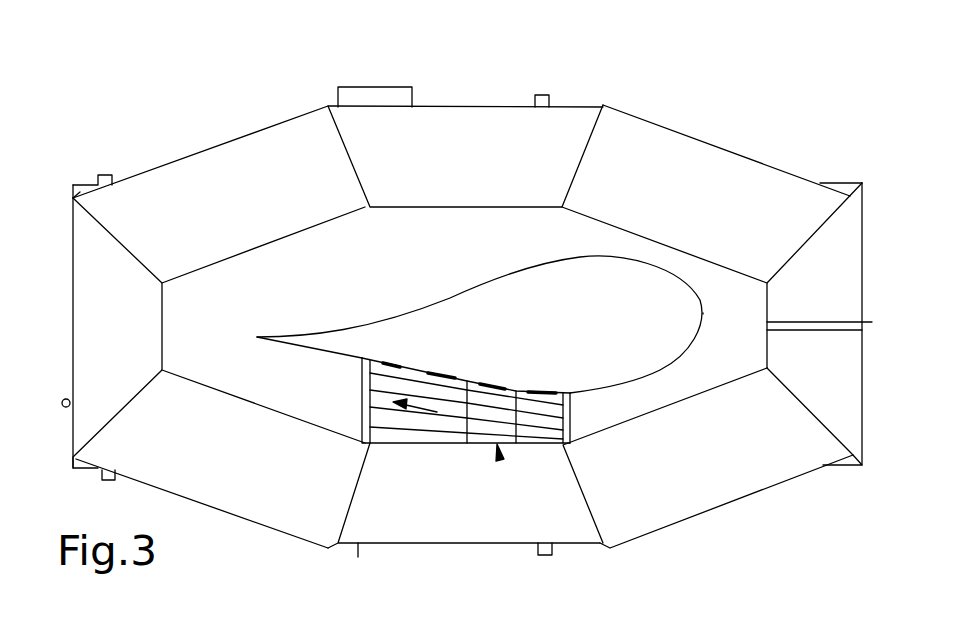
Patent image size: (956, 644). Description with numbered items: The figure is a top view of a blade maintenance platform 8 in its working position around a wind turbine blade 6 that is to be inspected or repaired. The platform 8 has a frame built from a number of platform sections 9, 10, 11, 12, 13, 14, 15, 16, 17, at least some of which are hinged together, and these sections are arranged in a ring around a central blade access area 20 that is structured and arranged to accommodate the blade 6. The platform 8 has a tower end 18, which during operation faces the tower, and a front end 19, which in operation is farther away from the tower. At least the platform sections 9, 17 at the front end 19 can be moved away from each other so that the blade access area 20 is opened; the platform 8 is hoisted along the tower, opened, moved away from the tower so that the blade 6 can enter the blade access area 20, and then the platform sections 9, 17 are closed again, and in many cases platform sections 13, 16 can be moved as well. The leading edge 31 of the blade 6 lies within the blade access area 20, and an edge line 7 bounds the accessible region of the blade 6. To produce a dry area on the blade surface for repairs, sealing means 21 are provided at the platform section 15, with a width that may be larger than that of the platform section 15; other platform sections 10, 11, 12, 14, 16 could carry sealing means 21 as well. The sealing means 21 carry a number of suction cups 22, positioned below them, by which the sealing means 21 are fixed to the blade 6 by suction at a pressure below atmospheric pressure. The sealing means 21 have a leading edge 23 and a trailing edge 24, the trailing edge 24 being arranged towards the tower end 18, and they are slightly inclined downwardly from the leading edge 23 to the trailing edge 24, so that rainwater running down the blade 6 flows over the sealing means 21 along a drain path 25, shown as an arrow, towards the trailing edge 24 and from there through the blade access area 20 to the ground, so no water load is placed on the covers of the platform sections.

The maintenance platform 8 is at (508, 87).
The platform section 9 is at (842, 253).
The platform section 10 is at (708, 157).
The platform section 11 is at (462, 120).
The platform section 12 is at (217, 158).
The platform section 13 is at (83, 320).
The platform section 14 is at (277, 518).
The platform section 15 is at (467, 528).
The platform section 16 is at (727, 488).
The platform section 17 is at (845, 400).
The tower end 18 is at (73, 247).
The front end 19 is at (862, 300).
The blade access area 20 is at (336, 278).
The blade 6 is at (588, 327).
The edge line 7 is at (257, 335).
The leading edge 31 is at (705, 320).
The suction cups 22 is at (398, 380).
The leading edge 23 is at (572, 415).
The trailing edge 24 is at (360, 402).
The drain path 25 is at (437, 412).
The sealing means 21 is at (500, 458).